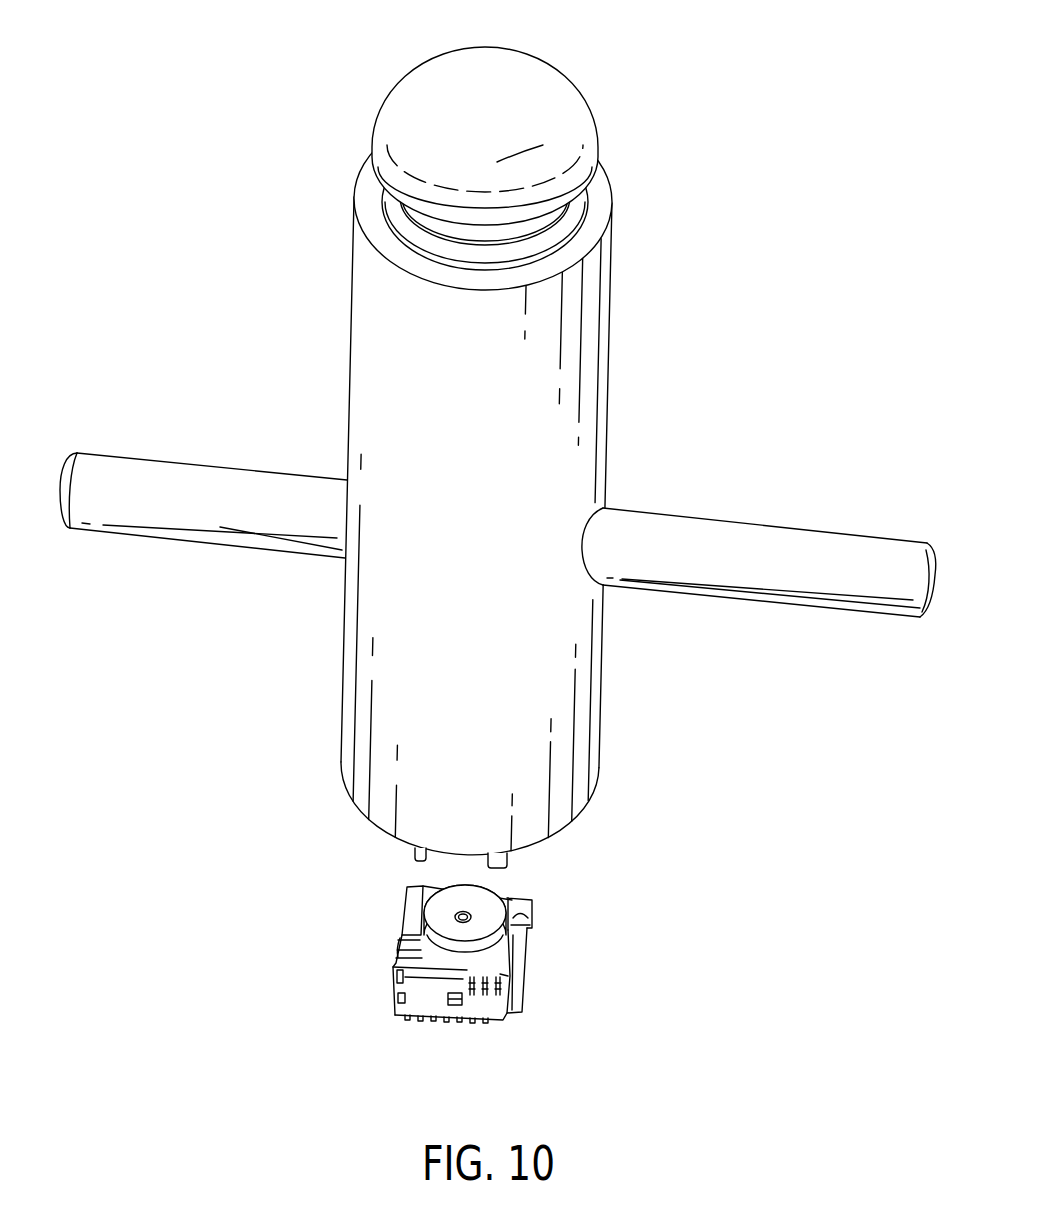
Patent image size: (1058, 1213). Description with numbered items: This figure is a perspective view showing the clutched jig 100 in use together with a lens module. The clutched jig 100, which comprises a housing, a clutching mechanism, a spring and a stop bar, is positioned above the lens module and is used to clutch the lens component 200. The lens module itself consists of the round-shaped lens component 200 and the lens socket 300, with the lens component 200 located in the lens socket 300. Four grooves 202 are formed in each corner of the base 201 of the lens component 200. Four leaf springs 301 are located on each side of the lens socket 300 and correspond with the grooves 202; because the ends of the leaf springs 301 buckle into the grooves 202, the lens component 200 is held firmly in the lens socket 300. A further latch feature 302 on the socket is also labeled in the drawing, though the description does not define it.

The clutched jig 100 is at (640, 370).
The lens component 200 is at (508, 886).
The base 201 is at (502, 967).
The grooves 202 is at (413, 968).
The lens socket 300 is at (503, 1026).
The leaf springs 301 is at (400, 946).
The latch arm 302 is at (413, 935).